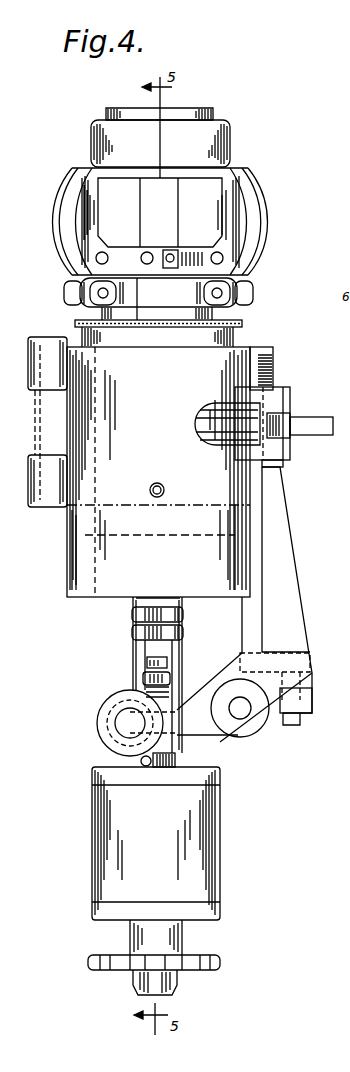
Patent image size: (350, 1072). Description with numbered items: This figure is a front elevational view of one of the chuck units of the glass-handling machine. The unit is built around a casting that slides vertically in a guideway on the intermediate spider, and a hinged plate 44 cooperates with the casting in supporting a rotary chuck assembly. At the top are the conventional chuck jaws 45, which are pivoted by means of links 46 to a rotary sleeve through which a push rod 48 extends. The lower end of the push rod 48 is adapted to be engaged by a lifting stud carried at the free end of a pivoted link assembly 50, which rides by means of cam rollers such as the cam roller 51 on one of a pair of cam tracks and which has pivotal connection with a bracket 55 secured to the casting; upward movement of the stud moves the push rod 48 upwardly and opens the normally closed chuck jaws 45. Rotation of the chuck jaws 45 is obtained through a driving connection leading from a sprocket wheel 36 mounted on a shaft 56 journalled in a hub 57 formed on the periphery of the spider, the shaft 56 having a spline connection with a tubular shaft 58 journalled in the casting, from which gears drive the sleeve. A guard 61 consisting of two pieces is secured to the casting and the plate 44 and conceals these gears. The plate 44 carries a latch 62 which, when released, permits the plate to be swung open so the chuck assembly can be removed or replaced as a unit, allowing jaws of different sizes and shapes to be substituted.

The sprocket wheel 36 is at (223, 962).
The hinged plate 44 is at (243, 348).
The chuck jaws 45 is at (262, 204).
The links 46 is at (238, 282).
The push rod 48 is at (163, 653).
The pivoted link assembly 50 is at (213, 730).
The cam roller 51 is at (118, 694).
The bracket 55 is at (287, 551).
The shaft 56 is at (176, 761).
The hub 57 is at (218, 866).
The tubular shaft 58 is at (134, 645).
The guard 61 is at (78, 591).
The latch 62 is at (308, 424).